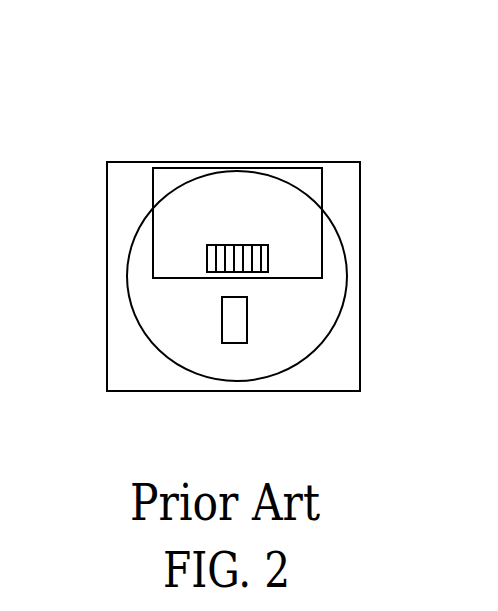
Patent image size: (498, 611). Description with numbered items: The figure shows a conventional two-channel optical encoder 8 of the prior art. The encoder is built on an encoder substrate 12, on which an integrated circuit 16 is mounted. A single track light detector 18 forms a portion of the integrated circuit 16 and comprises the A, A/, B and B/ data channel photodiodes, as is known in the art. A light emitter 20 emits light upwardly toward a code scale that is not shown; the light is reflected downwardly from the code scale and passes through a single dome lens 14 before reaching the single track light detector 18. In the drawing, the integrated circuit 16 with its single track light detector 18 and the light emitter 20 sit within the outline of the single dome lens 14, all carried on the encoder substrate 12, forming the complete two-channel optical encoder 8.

The two-channel optical encoder 8 is at (81, 36).
The encoder substrate 12 is at (129, 178).
The single dome lens 14 is at (335, 270).
The integrated circuit 16 is at (307, 180).
The single track light detector 18 is at (207, 260).
The light emitter 20 is at (233, 342).